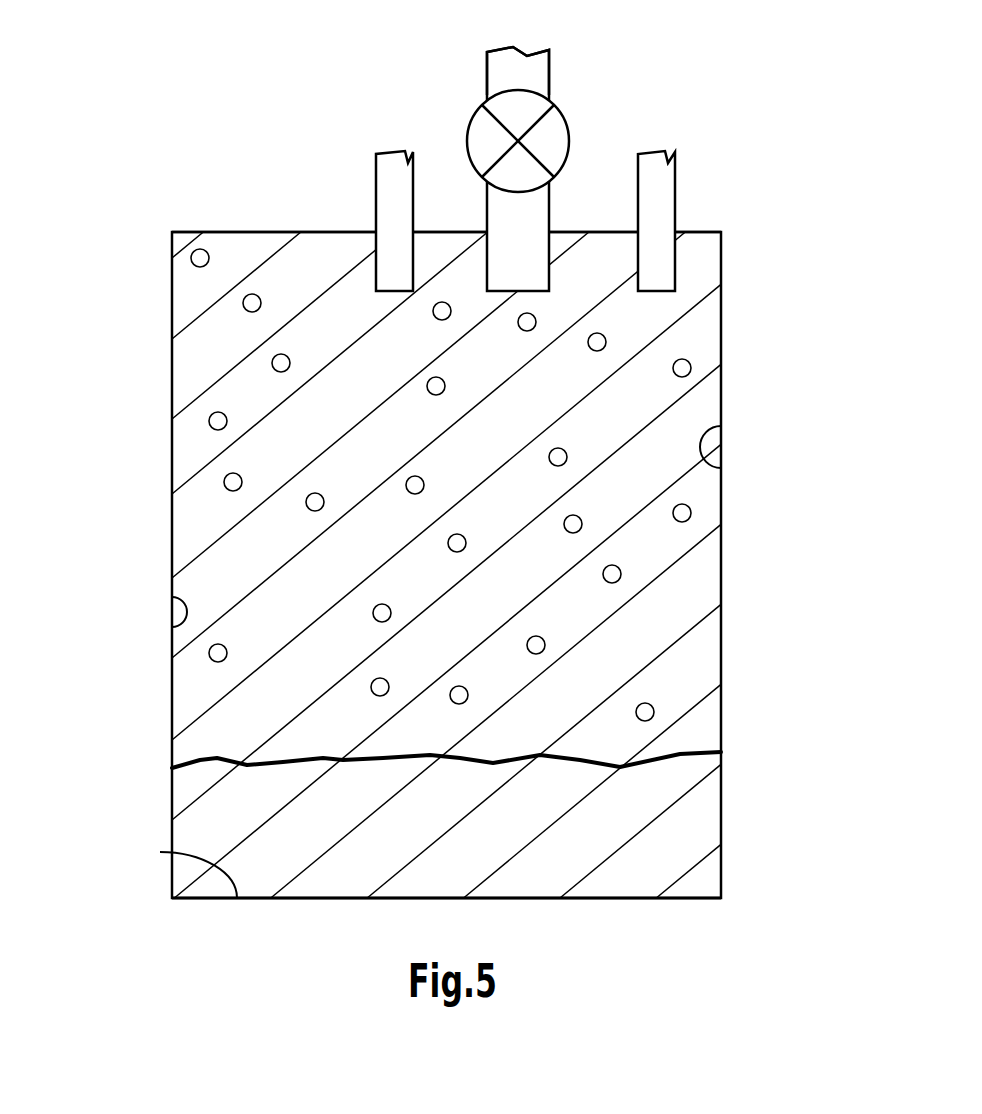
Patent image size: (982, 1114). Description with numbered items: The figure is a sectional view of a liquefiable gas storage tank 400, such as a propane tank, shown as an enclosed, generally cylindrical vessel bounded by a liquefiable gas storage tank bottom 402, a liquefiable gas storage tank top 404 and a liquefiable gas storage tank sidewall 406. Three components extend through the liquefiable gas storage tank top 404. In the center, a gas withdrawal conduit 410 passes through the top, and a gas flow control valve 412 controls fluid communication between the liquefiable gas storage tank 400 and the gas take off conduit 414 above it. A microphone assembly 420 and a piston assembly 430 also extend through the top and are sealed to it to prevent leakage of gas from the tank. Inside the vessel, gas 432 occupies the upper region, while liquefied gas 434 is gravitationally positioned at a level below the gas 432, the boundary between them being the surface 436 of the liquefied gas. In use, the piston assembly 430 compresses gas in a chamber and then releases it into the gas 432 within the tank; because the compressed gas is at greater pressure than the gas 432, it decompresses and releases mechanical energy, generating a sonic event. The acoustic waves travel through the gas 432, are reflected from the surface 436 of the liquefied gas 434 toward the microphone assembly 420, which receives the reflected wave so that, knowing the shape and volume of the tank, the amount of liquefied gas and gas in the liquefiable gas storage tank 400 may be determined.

The liquefiable gas storage tank 400 is at (172, 541).
The liquefiable gas storage tank bottom 402 is at (160, 852).
The liquefiable gas storage tank top 404 is at (233, 231).
The liquefiable gas storage tank sidewall 406 is at (716, 432).
The gas withdrawal conduit 410 is at (487, 268).
The gas flow control valve 412 is at (550, 135).
The gas take off conduit 414 is at (523, 70).
The microphone assembly 420 is at (678, 270).
The piston assembly 430 is at (376, 272).
The gas 432 is at (226, 481).
The liquefied gas 434 is at (660, 840).
The liquid interface 436 is at (210, 757).